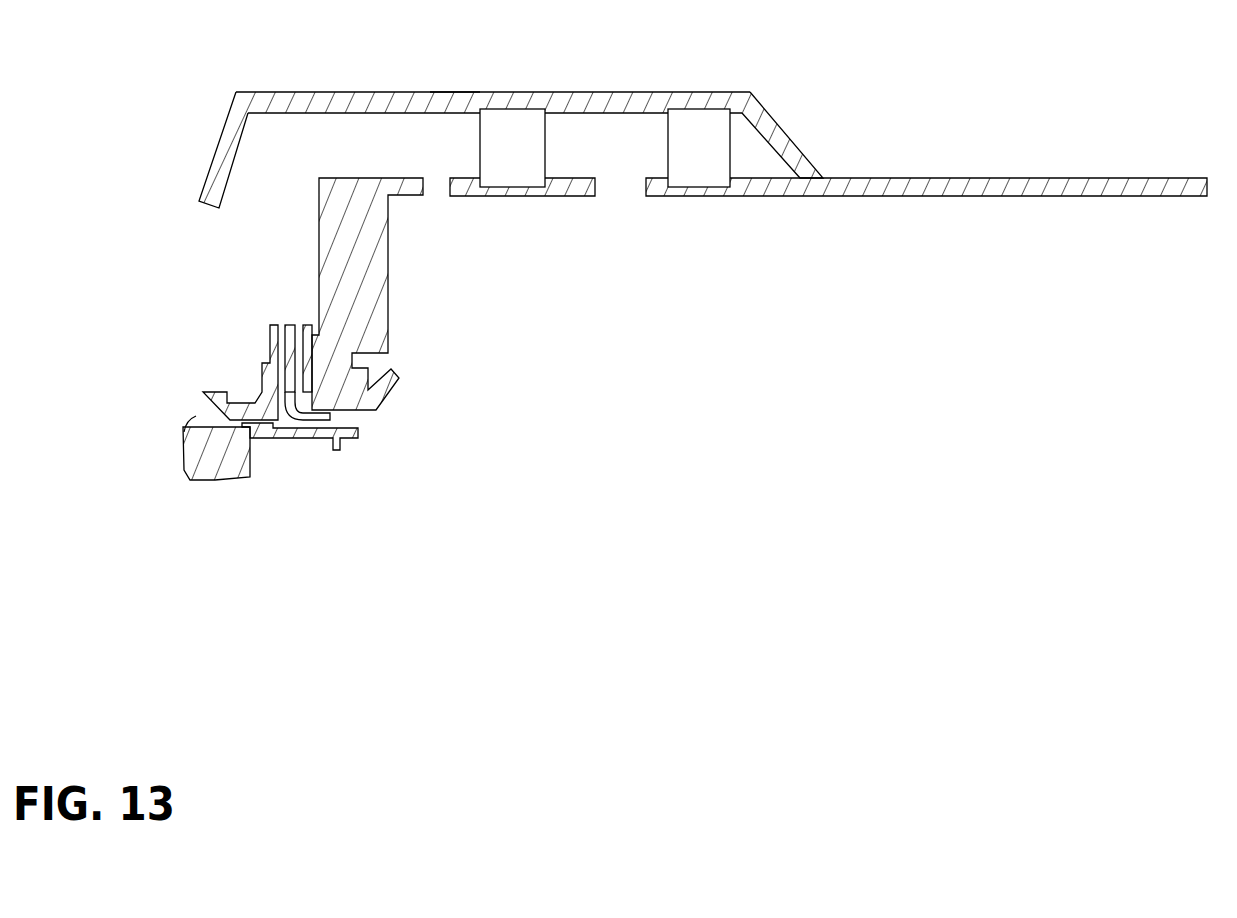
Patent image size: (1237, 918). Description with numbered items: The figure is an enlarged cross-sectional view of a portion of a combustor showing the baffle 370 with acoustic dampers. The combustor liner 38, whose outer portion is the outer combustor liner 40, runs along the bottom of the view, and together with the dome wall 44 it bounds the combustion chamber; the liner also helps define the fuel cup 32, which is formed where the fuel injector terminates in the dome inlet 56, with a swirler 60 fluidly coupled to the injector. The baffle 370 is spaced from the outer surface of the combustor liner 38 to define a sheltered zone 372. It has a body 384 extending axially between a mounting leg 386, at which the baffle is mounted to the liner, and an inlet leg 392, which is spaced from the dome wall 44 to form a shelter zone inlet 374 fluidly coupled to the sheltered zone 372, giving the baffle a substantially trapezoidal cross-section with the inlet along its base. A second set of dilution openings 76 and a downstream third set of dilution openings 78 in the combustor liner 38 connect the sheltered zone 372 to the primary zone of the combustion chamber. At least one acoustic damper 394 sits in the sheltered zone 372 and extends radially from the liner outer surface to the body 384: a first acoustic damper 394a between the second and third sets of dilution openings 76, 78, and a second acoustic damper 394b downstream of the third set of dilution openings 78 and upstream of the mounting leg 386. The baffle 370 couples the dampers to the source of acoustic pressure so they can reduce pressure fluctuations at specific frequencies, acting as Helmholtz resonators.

The fuel cup 32 is at (333, 536).
The combustor liner 38 is at (1008, 174).
The outer combustor liner 40 is at (1070, 176).
The dome wall 44 is at (377, 278).
The dome inlet 56 is at (346, 433).
The swirler 60 is at (343, 420).
The second set of dilution openings 76 is at (433, 188).
The third set of dilution openings 78 is at (617, 188).
The baffle 370 is at (571, 92).
The sheltered zone 372 is at (345, 137).
The shelter zone inlet 374 is at (255, 224).
The body 384 is at (452, 90).
The mounting leg 386 is at (783, 142).
The inlet leg 392 is at (223, 150).
The acoustic damper 394 is at (734, 189).
The first acoustic damper 394a is at (505, 165).
The second acoustic damper 394b is at (688, 165).